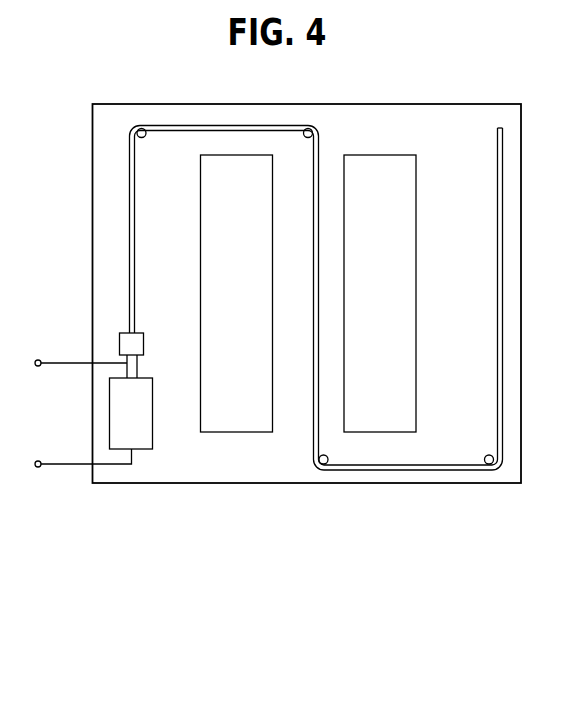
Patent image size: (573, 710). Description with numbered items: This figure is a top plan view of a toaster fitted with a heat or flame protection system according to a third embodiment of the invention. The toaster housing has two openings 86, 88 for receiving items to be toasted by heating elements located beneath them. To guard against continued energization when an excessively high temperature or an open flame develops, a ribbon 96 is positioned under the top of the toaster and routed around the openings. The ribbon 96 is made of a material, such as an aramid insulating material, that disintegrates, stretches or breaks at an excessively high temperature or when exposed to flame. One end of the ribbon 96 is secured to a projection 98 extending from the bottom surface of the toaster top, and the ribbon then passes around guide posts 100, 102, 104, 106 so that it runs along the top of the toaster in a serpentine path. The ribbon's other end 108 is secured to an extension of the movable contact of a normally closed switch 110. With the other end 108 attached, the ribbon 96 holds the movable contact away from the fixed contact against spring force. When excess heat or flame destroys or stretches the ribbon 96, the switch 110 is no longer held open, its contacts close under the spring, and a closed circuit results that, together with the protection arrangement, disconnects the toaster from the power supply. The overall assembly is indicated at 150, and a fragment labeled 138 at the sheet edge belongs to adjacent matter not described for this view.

The heating device assembly 150 is at (532, 143).
The ribbon 96 is at (503, 323).
The projection 98 is at (500, 127).
The guide post 100 is at (489, 464).
The guide post 102 is at (324, 464).
The guide post 104 is at (307, 128).
The guide post 106 is at (142, 128).
The opening 86 is at (252, 242).
The opening 88 is at (394, 243).
The other end of ribbon 108 is at (119, 341).
The normally closed switch 110 is at (150, 440).
The adjacent component (fragment) 138 is at (561, 532).